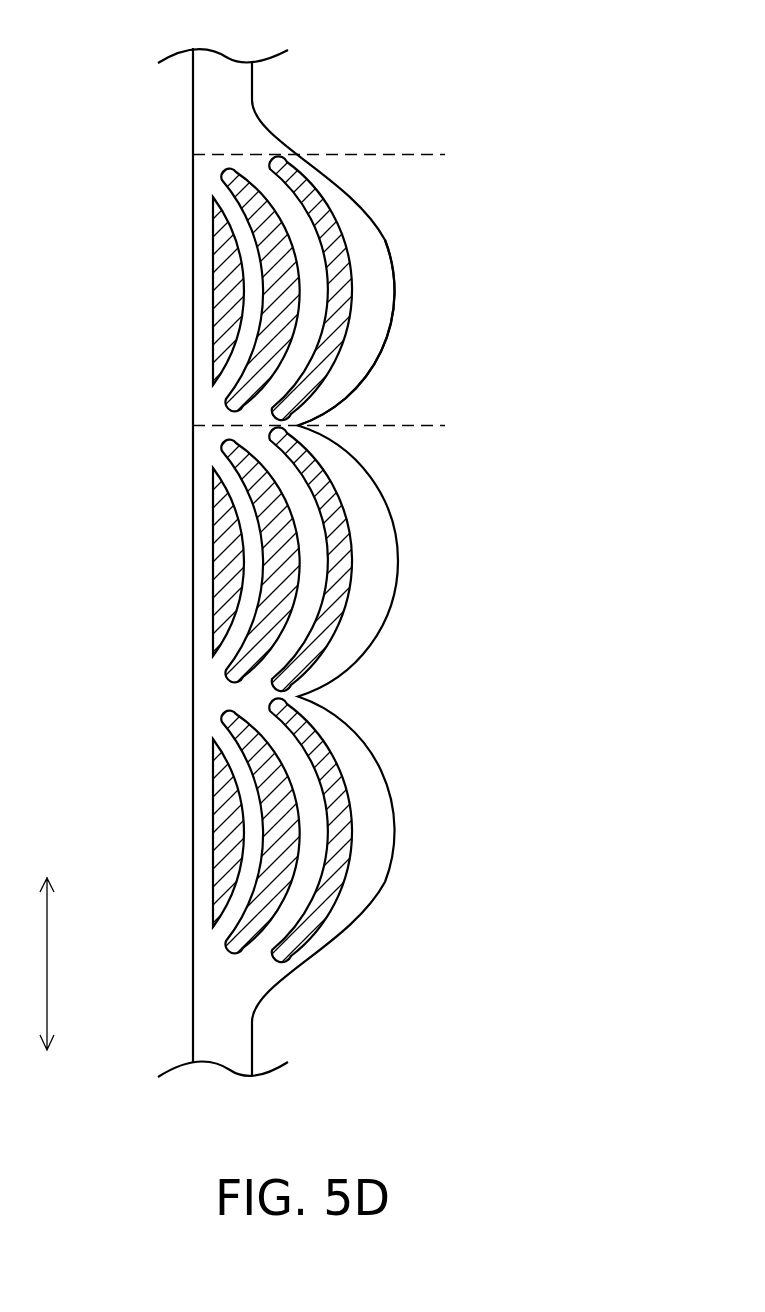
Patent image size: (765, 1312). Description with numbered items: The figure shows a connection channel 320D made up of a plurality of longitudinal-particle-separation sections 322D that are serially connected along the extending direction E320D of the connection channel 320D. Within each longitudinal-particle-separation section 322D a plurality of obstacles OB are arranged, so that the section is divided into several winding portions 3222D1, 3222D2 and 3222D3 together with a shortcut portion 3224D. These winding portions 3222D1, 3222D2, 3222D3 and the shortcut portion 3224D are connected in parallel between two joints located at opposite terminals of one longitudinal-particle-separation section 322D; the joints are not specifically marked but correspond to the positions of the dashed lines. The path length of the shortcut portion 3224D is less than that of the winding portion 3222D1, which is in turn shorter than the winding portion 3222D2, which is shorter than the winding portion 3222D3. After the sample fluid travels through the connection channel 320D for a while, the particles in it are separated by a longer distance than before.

The connection channel 320D is at (462, 1113).
The longitudinal-particle-separation section 322D is at (445, 154).
The winding portion 3222D1 is at (328, 278).
The winding portion 3222D2 is at (363, 258).
The winding portion 3222D3 is at (397, 272).
The shortcut portion 3224D is at (213, 243).
The obstacle OB is at (230, 295).
The extending direction E320D is at (84, 963).